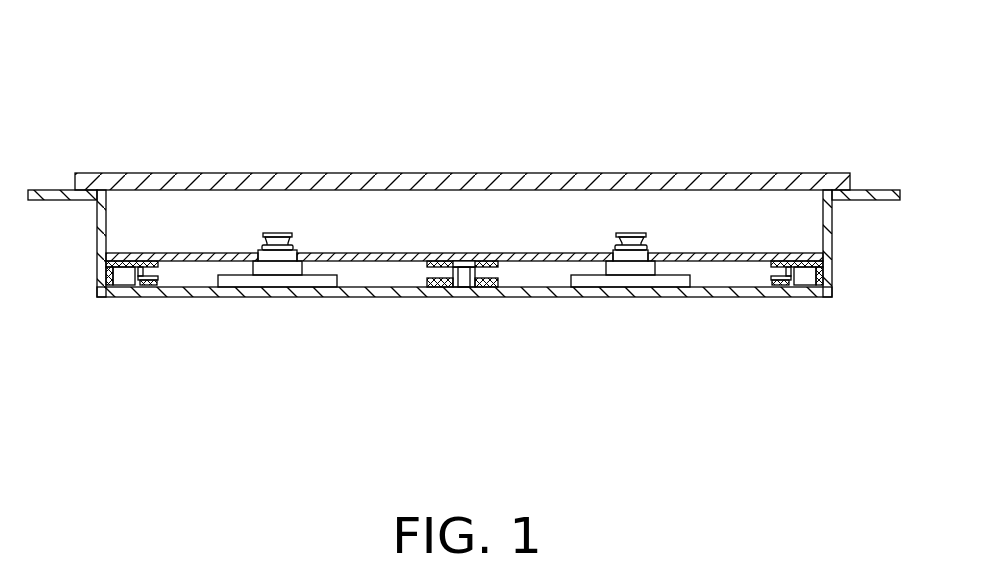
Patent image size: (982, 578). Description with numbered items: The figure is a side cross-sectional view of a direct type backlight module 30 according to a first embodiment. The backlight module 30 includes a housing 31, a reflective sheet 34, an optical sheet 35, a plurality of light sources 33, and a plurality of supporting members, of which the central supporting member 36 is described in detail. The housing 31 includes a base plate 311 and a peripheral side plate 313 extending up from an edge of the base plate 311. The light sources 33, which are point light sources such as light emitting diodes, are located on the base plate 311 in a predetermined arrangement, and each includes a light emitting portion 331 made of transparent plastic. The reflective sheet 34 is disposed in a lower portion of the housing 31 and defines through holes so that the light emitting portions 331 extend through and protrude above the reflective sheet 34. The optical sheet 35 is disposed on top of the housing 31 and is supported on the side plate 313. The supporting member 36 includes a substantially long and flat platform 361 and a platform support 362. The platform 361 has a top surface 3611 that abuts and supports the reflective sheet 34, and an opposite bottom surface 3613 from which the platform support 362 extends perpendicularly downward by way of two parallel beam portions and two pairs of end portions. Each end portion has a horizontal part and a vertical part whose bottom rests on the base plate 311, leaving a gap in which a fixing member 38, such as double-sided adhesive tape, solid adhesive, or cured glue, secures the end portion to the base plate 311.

The direct type backlight module 30 is at (478, 43).
The housing 31 is at (484, 270).
The base plate 311 is at (797, 295).
The peripheral side plate 313 is at (827, 253).
The light source 33 is at (673, 205).
The light emitting portion 331 is at (647, 245).
The reflective sheet 34 is at (325, 257).
The optical sheet 35 is at (197, 180).
The supporting member 36 is at (468, 237).
The platform 361 is at (442, 262).
The top surface 3611 is at (462, 261).
The platform support 362 is at (457, 286).
The bottom surface 3613 is at (468, 287).
The fixing member 38 is at (483, 287).